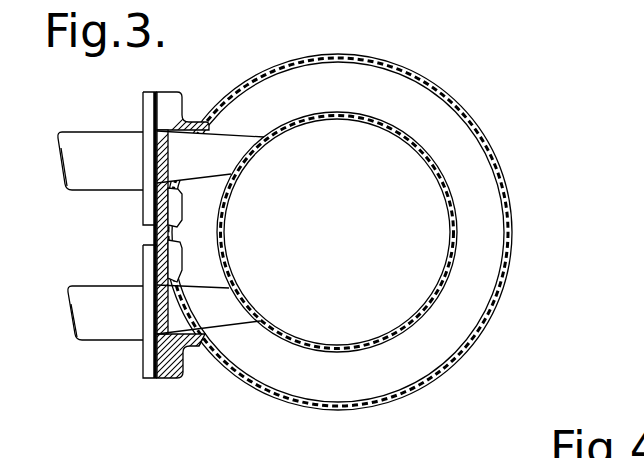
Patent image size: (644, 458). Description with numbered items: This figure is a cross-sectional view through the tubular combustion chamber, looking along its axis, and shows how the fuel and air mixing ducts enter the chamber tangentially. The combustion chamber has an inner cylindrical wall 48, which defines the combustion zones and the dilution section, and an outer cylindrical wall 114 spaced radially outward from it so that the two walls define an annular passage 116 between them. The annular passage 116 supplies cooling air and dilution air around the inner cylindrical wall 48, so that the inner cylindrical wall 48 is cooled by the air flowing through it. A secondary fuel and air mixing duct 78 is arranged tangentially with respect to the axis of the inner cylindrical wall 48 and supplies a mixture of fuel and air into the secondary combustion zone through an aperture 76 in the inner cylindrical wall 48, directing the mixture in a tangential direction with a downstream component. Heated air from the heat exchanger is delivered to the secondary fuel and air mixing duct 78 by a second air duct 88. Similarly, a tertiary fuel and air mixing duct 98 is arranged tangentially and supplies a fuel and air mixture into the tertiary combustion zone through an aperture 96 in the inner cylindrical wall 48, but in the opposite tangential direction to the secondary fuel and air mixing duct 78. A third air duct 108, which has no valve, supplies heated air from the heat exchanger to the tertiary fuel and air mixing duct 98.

The inner cylindrical wall 48 is at (459, 217).
The aperture 76 is at (264, 326).
The secondary fuel and air mixing duct 78 is at (175, 319).
The second air duct 88 is at (107, 318).
The aperture 96 is at (263, 136).
The tertiary fuel and air mixing duct 98 is at (200, 160).
The third air duct 108 is at (100, 173).
The outer cylindrical wall 114 is at (460, 106).
The annular passage 116 is at (459, 168).